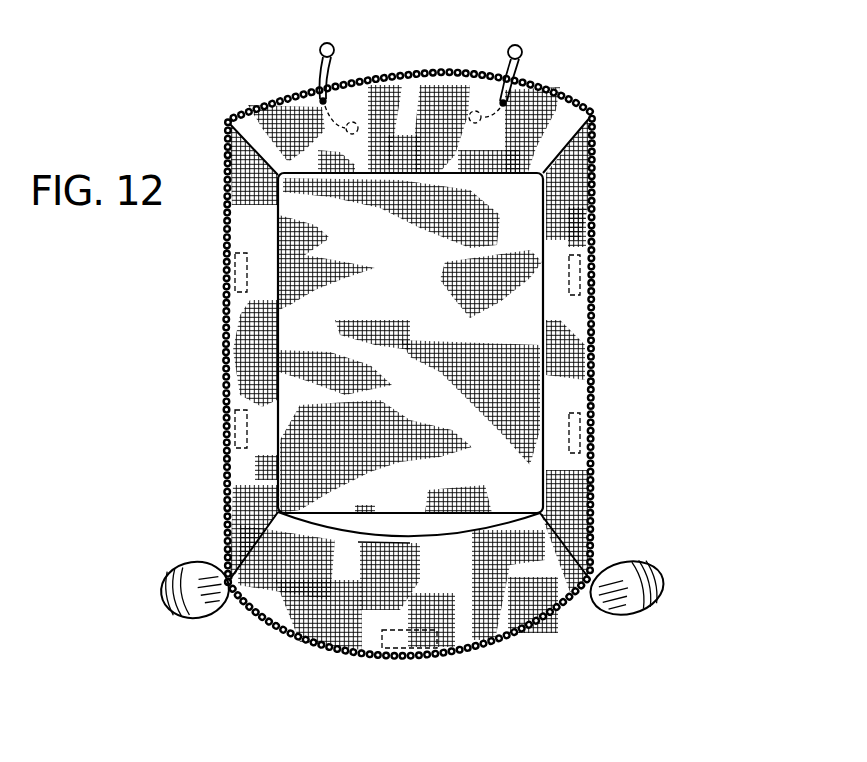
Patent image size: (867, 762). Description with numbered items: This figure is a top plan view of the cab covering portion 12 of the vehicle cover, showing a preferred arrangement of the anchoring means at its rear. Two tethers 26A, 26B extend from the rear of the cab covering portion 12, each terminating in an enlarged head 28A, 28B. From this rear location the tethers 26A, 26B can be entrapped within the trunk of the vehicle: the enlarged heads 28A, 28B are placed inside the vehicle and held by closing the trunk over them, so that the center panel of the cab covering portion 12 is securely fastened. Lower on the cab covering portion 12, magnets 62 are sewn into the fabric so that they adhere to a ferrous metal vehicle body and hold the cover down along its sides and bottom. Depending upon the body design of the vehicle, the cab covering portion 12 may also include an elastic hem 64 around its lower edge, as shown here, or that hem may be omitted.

The cab covering portion 12 is at (668, 184).
The tether 26A is at (516, 72).
The tether 26B is at (320, 73).
The enlarged head 28A is at (513, 46).
The enlarged head 28B is at (335, 45).
The magnets 62 is at (236, 272).
The elastic hem 64 is at (281, 640).